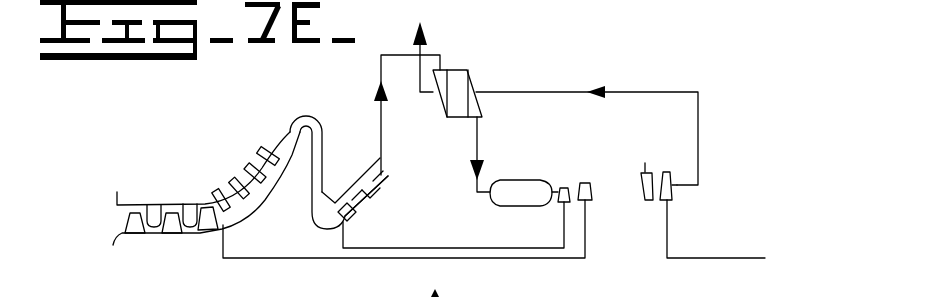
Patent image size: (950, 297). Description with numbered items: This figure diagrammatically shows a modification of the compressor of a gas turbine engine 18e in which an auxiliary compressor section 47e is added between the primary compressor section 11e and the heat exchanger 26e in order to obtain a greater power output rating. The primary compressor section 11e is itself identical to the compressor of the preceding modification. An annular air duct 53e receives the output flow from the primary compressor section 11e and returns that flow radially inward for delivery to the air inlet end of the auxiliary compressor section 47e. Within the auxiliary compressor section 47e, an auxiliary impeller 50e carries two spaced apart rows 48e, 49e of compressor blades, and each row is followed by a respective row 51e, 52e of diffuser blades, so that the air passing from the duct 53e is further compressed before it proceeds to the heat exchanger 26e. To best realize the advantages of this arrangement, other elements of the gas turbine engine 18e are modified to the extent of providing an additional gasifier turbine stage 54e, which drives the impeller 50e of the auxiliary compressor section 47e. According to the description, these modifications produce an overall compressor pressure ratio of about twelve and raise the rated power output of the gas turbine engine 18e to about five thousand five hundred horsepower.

The primary compressor section 11e is at (183, 146).
The annular air duct 53e is at (298, 113).
The auxiliary compressor section 47e is at (389, 218).
The row of compressor blades 48e is at (351, 226).
The row of compressor blades 49e is at (376, 216).
The auxiliary impeller 50e is at (383, 193).
The row of diffuser blades 51e is at (349, 186).
The row of diffuser blades 52e is at (380, 173).
The heat exchanger 26e is at (462, 69).
The gas turbine engine 18e is at (726, 96).
The additional gasifier turbine stage 54e is at (585, 180).